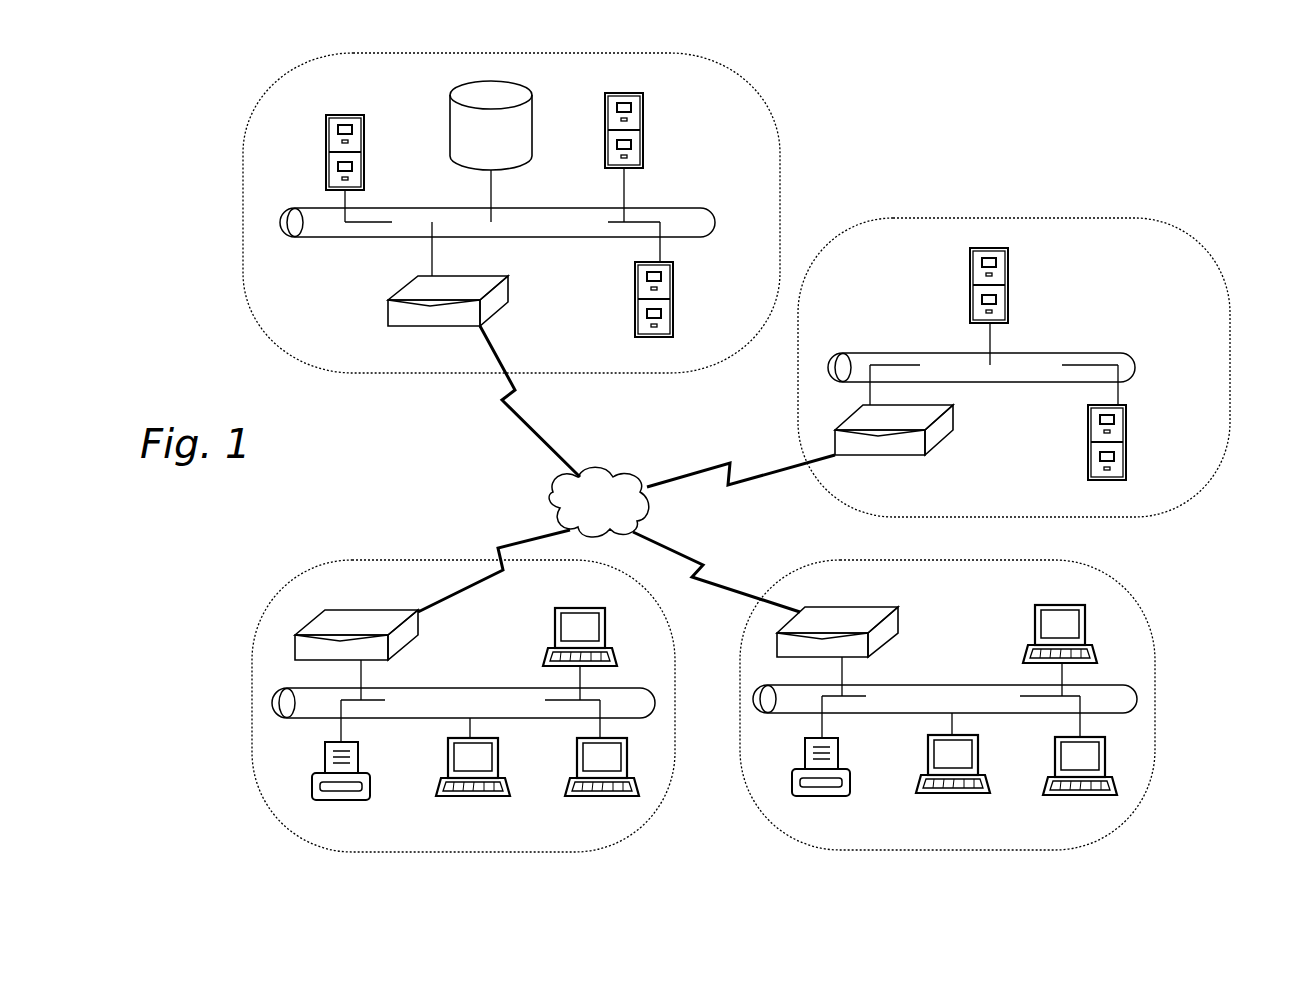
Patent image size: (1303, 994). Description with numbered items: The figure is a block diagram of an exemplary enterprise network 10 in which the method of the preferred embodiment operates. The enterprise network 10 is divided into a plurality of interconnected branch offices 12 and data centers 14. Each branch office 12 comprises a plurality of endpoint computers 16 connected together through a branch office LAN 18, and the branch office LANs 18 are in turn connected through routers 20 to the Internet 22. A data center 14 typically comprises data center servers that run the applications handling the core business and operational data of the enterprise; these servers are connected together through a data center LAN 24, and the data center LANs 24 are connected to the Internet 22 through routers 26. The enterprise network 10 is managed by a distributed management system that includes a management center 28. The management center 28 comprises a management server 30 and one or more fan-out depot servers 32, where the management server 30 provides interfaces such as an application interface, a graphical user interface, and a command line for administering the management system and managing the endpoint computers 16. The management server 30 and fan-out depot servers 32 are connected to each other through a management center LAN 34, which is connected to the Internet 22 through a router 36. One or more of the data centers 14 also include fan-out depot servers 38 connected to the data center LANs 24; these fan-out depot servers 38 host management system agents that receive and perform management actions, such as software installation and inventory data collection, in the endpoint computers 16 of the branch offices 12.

The enterprise network 10 is at (960, 130).
The branch office 12 is at (252, 640).
The data center 14 is at (1072, 218).
The endpoint computer 16 is at (607, 637).
The branch office LAN 18 is at (272, 707).
The router 20 is at (316, 615).
The Internet 22 is at (553, 492).
The data center LAN 24 is at (1135, 367).
The router 26 is at (940, 452).
The management center 28 is at (730, 80).
The management server 30 is at (355, 82).
The fan-out depot server 32 is at (645, 137).
The management center LAN 34 is at (718, 222).
The router 36 is at (385, 326).
The fan-out depot server 38 is at (1010, 298).